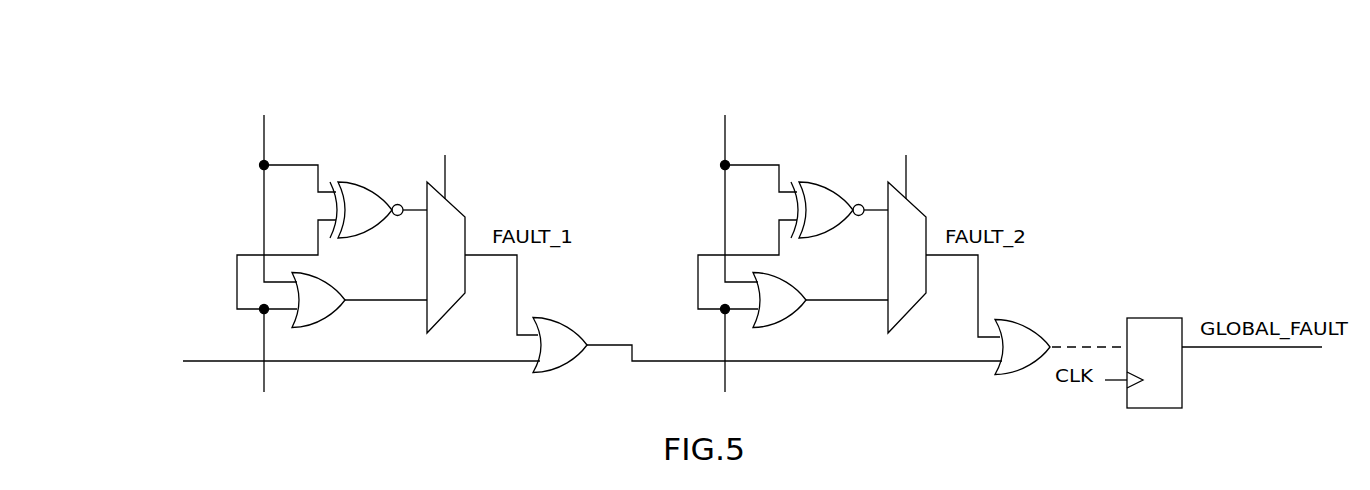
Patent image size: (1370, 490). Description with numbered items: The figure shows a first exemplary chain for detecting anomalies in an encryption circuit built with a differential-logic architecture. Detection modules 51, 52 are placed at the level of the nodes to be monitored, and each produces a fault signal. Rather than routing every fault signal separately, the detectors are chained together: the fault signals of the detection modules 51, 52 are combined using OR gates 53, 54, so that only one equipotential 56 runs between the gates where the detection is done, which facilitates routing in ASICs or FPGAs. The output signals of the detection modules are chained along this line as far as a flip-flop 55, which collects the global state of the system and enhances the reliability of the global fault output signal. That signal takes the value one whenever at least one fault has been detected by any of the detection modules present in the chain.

The detection module 51 is at (530, 87).
The detection module 52 is at (990, 87).
The OR gate 53 is at (566, 355).
The OR gate 54 is at (1018, 362).
The flip-flop 55 is at (1158, 395).
The equipotential 56 is at (433, 361).